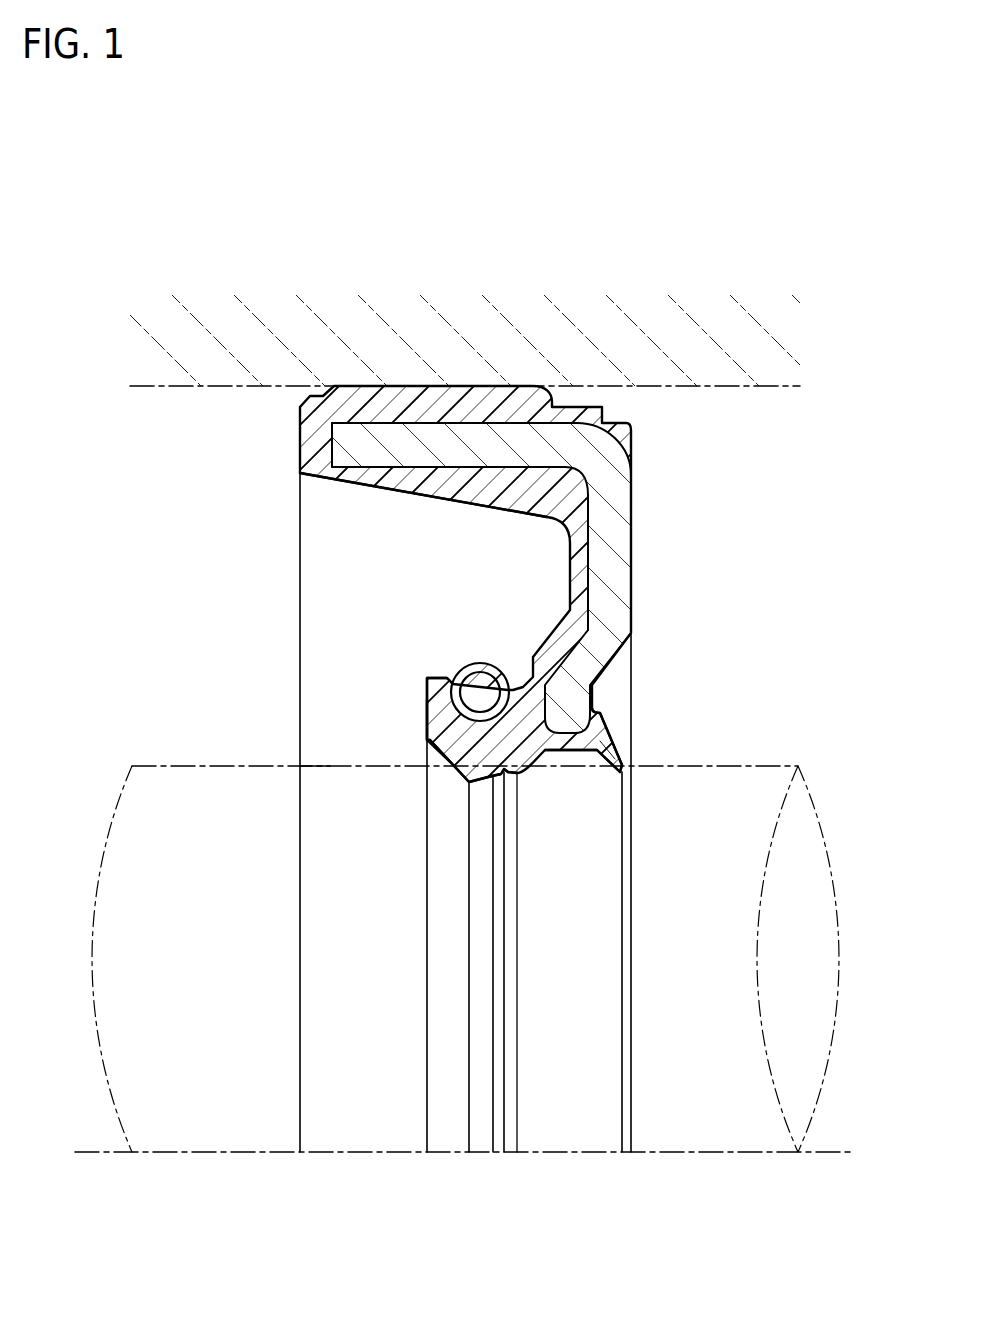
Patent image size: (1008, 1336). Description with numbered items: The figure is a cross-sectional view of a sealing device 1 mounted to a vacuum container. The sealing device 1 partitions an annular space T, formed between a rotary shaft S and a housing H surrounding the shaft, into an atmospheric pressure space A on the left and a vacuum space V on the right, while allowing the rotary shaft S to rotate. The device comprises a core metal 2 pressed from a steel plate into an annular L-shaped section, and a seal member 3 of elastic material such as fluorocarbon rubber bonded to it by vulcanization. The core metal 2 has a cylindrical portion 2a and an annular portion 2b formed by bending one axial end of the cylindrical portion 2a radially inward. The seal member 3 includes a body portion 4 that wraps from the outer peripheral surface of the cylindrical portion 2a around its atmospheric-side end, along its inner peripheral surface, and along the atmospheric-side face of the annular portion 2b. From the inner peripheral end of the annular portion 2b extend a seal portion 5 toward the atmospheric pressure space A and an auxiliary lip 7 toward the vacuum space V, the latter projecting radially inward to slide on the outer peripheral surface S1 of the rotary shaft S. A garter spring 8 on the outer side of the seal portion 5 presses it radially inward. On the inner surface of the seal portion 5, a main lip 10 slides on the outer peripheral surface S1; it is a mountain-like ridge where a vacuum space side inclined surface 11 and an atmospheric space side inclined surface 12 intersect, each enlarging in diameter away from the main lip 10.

The sealing device 1 is at (504, 525).
The core metal 2 is at (490, 488).
The cylindrical portion 2a is at (400, 442).
The annular portion 2b is at (622, 533).
The seal member 3 is at (477, 508).
The body portion 4 is at (367, 483).
The seal portion 5 is at (424, 690).
The auxiliary lip 7 is at (608, 740).
The garter spring 8 is at (480, 663).
The main lip 10 is at (469, 782).
The vacuum space side inclined surface 11 is at (503, 775).
The atmospheric space side inclined surface 12 is at (423, 757).
The housing H is at (700, 355).
The rotary shaft S is at (817, 815).
The outer peripheral surface S1 is at (769, 766).
The atmospheric pressure space A is at (173, 443).
The vacuum space V is at (758, 443).
The annular space T is at (783, 520).